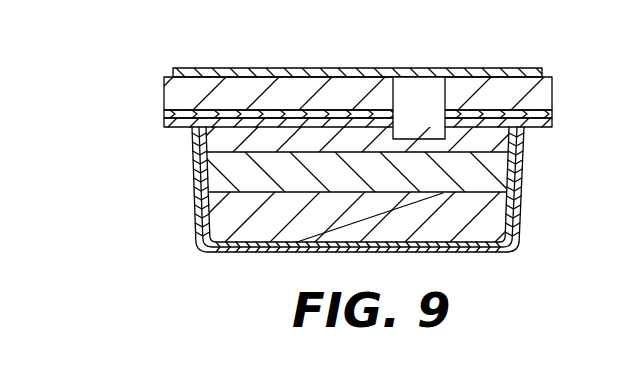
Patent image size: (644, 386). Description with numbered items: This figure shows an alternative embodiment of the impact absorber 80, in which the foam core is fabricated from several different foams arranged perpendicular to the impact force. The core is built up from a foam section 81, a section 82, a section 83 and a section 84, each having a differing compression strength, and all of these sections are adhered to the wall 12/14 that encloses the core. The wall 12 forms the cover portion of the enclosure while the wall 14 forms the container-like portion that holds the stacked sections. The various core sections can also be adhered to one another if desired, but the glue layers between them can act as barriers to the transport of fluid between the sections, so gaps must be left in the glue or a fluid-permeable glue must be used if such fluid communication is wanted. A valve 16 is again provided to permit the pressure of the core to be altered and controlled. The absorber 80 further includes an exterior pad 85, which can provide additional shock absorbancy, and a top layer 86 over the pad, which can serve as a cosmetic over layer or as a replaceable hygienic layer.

The wall 12 is at (380, 73).
The wall 14 is at (385, 202).
The valve 16 is at (418, 128).
The impact absorber 80 is at (377, 148).
The foam section 81 is at (224, 137).
The section 82 is at (238, 172).
The section 83 is at (226, 218).
The section 84 is at (508, 246).
The exterior pad 85 is at (267, 88).
The top layer 86 is at (207, 75).